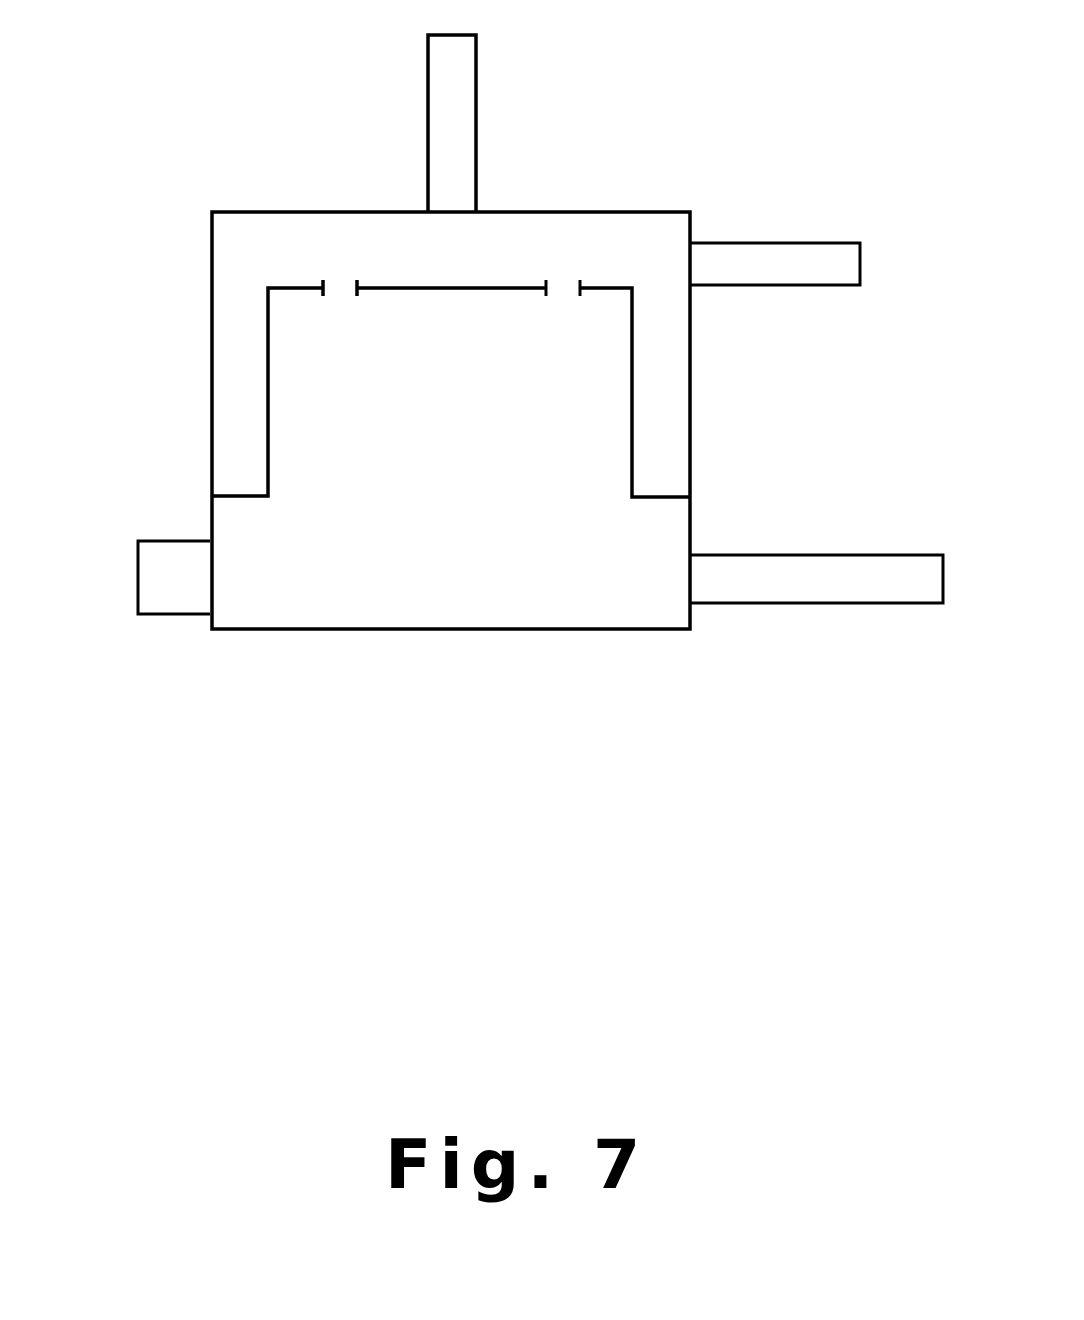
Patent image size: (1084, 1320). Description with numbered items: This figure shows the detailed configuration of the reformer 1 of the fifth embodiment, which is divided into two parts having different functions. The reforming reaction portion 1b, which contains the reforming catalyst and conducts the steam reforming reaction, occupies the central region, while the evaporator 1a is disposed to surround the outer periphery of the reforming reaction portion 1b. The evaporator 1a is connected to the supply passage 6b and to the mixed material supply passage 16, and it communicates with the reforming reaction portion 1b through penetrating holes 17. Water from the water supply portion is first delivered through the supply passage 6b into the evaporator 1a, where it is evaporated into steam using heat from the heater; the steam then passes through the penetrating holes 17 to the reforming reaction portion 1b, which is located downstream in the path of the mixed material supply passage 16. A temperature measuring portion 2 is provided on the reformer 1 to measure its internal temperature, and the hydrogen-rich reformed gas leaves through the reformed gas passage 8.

The reformer 1 is at (587, 420).
The evaporator 1a is at (673, 407).
The reforming reaction portion 1b is at (610, 468).
The temperature measuring portion 2 is at (152, 574).
The supply passage 6b is at (806, 258).
The reformed gas passage 8 is at (868, 592).
The mixed material supply passage 16 is at (477, 86).
The penetrating holes 17 is at (341, 278).